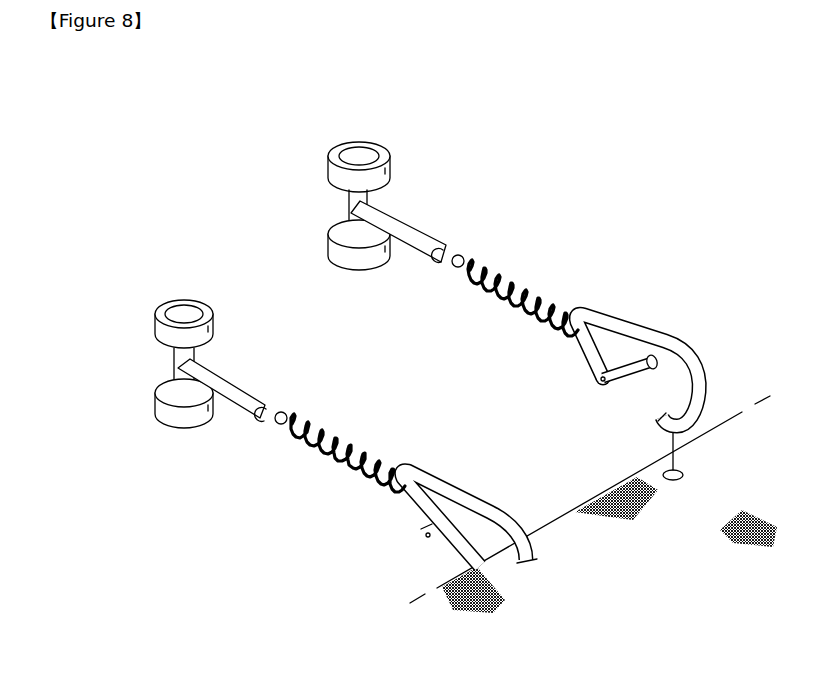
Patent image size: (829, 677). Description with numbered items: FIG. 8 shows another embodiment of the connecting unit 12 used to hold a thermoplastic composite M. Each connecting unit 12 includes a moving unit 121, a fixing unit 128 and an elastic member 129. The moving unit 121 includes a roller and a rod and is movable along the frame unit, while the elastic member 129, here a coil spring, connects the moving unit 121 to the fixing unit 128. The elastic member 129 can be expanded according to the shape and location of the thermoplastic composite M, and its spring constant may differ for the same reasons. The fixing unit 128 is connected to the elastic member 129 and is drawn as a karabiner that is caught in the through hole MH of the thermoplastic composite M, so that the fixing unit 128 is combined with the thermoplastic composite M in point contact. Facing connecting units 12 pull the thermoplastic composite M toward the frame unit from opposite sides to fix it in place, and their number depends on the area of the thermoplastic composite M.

The connecting unit 12 is at (305, 546).
The moving unit 121 is at (405, 160).
The fixing unit 128 is at (660, 324).
The elastic member 129 is at (538, 297).
The through hole MH is at (666, 468).
The thermoplastic composite M is at (637, 569).